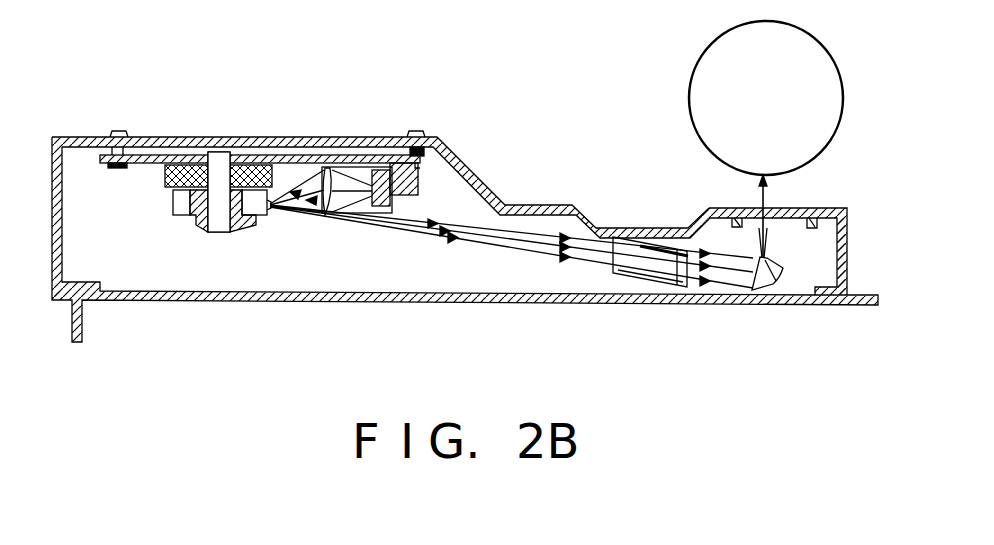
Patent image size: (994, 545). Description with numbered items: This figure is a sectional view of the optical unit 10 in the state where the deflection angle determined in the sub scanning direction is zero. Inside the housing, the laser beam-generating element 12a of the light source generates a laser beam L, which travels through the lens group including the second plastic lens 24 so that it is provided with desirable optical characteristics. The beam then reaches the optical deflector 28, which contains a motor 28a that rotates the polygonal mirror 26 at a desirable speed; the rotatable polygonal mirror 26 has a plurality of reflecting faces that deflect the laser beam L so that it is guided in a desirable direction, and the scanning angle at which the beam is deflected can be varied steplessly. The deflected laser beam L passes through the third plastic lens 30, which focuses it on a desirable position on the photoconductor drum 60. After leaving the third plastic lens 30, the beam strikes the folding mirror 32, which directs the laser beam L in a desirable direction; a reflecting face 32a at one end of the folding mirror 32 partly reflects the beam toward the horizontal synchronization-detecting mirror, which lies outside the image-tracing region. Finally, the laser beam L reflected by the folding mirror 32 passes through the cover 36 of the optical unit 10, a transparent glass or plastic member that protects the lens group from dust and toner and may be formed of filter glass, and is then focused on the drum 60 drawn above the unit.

The optical unit 10 is at (559, 200).
The laser beam-generating element 12a is at (357, 166).
The second plastic lens 24 is at (327, 216).
The polygonal mirror 26 is at (174, 203).
The optical deflector 28 is at (245, 231).
The motor 28a is at (166, 177).
The third plastic lens 30 is at (648, 256).
The folding mirror 32 is at (772, 283).
The reflecting face 32a is at (758, 258).
The cover 36 is at (782, 208).
The photoconductor drum 60 is at (707, 50).
The laser beam L is at (483, 232).